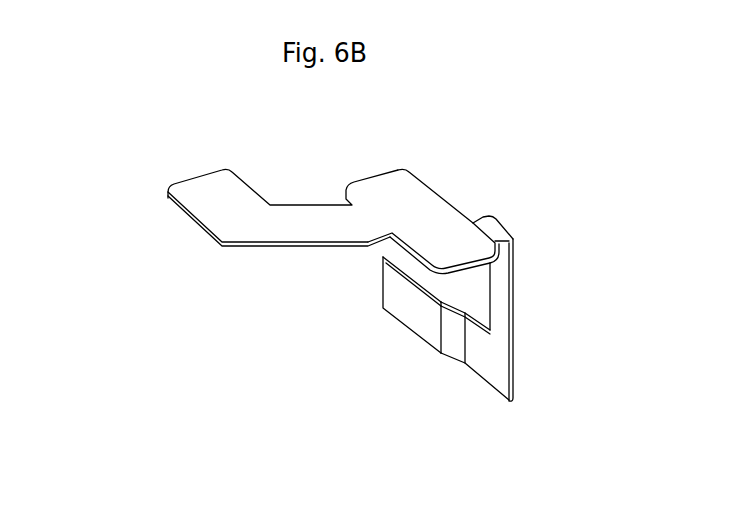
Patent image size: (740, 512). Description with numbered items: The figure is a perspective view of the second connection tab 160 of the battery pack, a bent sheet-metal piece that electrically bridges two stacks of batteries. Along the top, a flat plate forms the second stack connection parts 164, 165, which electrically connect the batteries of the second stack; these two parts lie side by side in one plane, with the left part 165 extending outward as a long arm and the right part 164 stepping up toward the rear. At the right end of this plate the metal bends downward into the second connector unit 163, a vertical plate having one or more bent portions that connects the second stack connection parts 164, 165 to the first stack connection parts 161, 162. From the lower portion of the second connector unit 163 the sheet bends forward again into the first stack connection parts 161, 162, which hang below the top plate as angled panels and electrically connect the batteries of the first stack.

The second connection tab 160 is at (116, 110).
The first stack connection part 161 is at (480, 362).
The first stack connection part 162 is at (410, 316).
The second connector unit 163 is at (500, 281).
The second stack connection part 164 is at (417, 198).
The second stack connection part 165 is at (200, 187).